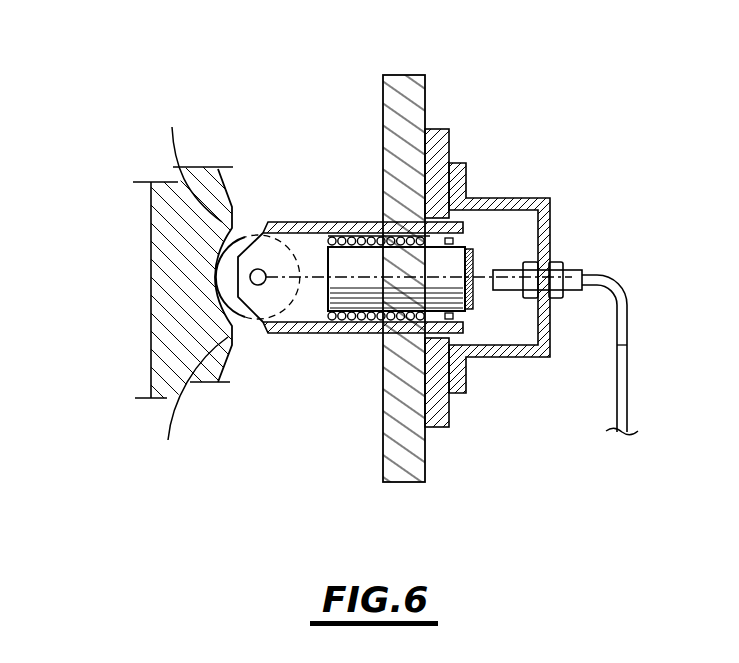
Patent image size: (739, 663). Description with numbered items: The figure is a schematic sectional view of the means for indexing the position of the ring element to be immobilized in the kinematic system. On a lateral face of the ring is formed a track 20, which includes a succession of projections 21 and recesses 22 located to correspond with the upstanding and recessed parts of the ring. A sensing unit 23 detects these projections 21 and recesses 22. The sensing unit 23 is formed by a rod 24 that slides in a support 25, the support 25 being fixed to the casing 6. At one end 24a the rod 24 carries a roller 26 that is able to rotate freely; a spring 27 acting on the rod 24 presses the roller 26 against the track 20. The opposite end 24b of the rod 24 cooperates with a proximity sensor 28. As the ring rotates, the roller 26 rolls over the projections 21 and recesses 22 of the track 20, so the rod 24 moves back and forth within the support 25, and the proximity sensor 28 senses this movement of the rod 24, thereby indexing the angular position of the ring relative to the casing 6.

The casing 6 is at (407, 462).
The track 20 is at (173, 305).
The projections 21 is at (192, 292).
The recesses 22 is at (250, 277).
The sensing unit 23 is at (512, 225).
The rod 24 is at (370, 288).
The end of the rod 24a is at (303, 297).
The end of the rod 24b is at (462, 316).
The support 25 is at (308, 220).
The roller 26 is at (232, 300).
The spring 27 is at (362, 231).
The proximity sensor 28 is at (505, 284).